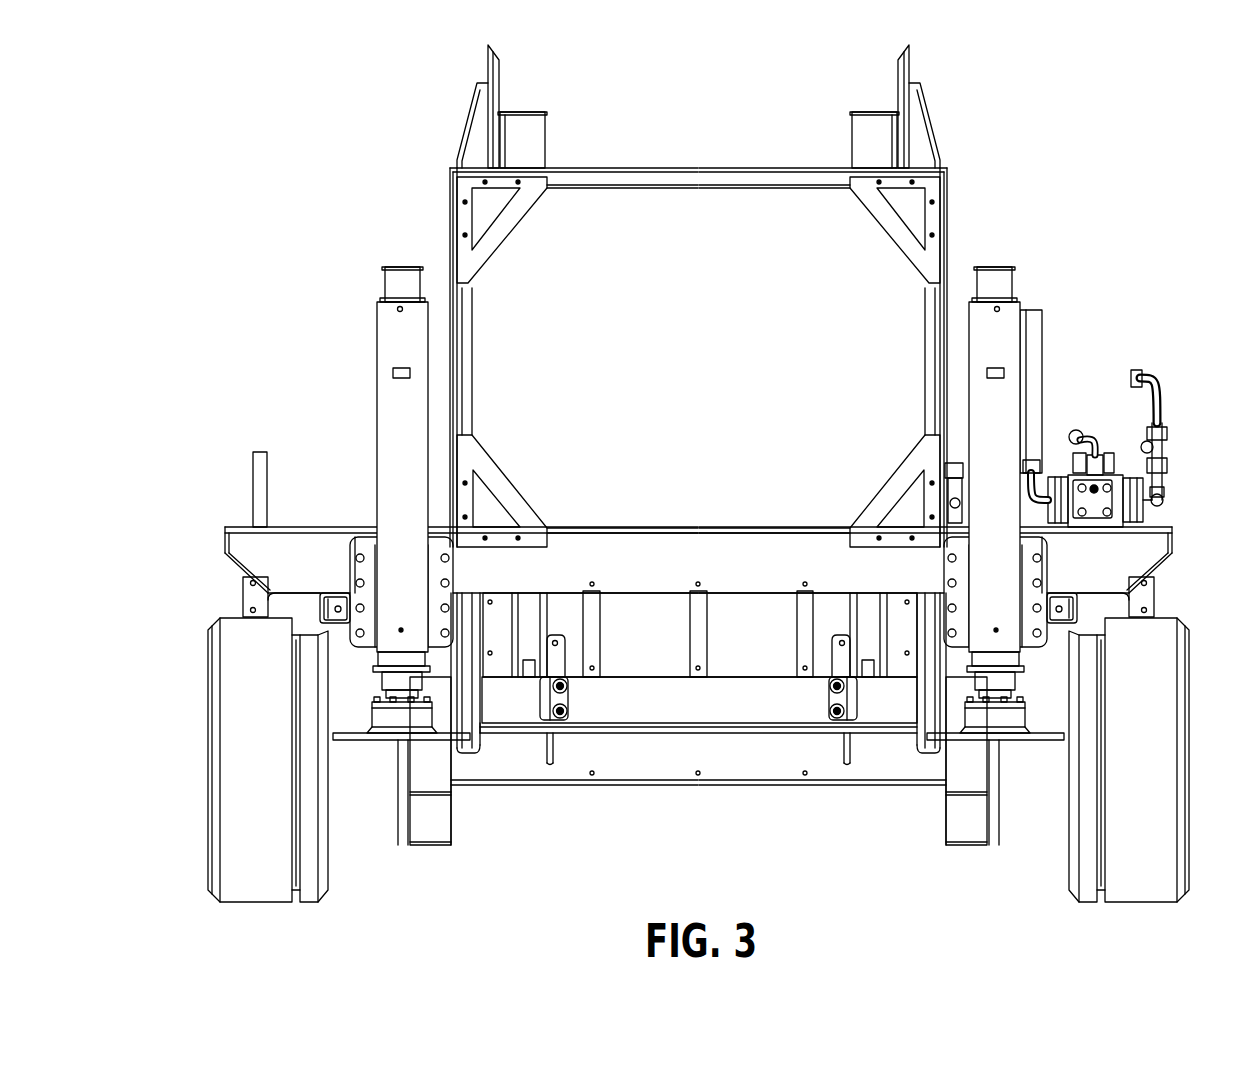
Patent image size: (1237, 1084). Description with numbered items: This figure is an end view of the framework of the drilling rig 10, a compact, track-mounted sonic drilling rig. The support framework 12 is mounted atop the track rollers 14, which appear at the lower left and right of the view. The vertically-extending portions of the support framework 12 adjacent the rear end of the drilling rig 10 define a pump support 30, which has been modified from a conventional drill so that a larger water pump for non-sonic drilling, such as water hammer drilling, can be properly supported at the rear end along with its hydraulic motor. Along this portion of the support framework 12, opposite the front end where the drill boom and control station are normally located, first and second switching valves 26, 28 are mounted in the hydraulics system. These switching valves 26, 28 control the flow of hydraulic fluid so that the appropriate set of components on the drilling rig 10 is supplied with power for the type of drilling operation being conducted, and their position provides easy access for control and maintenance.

The drilling rig 10 is at (1104, 153).
The support framework 12 is at (671, 168).
The track rollers 14 is at (259, 880).
The first switching valve 26 is at (1110, 480).
The second switching valve 28 is at (1055, 477).
The pump support 30 is at (708, 548).